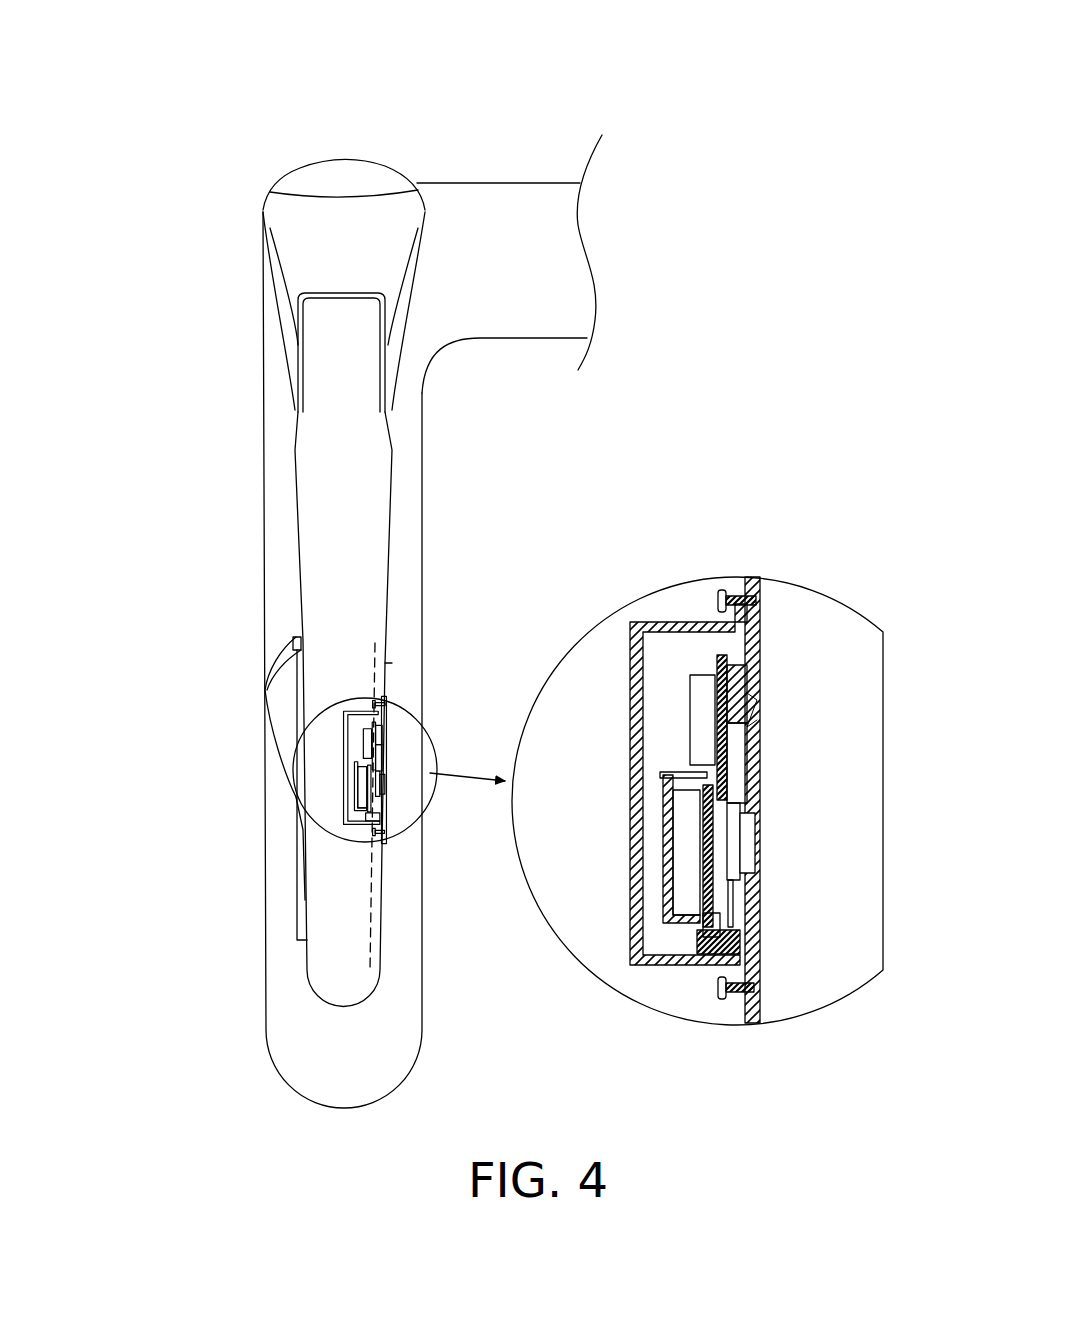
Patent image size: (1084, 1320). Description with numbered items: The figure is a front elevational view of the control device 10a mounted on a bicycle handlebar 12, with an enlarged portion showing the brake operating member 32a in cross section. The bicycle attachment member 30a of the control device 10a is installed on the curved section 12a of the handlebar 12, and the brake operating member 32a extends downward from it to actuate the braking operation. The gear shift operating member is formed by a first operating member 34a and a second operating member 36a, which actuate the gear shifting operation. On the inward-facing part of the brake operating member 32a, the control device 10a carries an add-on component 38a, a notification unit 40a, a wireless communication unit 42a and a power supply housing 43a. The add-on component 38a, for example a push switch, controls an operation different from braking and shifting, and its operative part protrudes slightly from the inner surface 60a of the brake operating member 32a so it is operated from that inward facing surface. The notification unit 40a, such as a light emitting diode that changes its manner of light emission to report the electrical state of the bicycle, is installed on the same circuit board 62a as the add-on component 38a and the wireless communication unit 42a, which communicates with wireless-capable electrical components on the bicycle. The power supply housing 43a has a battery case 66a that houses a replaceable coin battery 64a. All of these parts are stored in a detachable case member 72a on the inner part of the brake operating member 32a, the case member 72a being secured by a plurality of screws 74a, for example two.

The control device 10a is at (270, 168).
The handlebar 12 is at (528, 160).
The curved section 12a is at (422, 450).
The bicycle attachment member 30a is at (270, 233).
The brake operating member 32a is at (307, 453).
The first operating member 34a is at (302, 830).
The second operating member 36a is at (265, 687).
The add-on component 38a is at (757, 858).
The notification unit 40a is at (747, 700).
The wireless communication unit 42a is at (700, 695).
The power supply housing 43a is at (700, 945).
The inner surface 60a is at (387, 663).
The circuit board 62a is at (717, 660).
The coin battery 64a is at (682, 888).
The battery case 66a is at (687, 940).
The case member 72a is at (627, 893).
The screws 74a is at (718, 590).